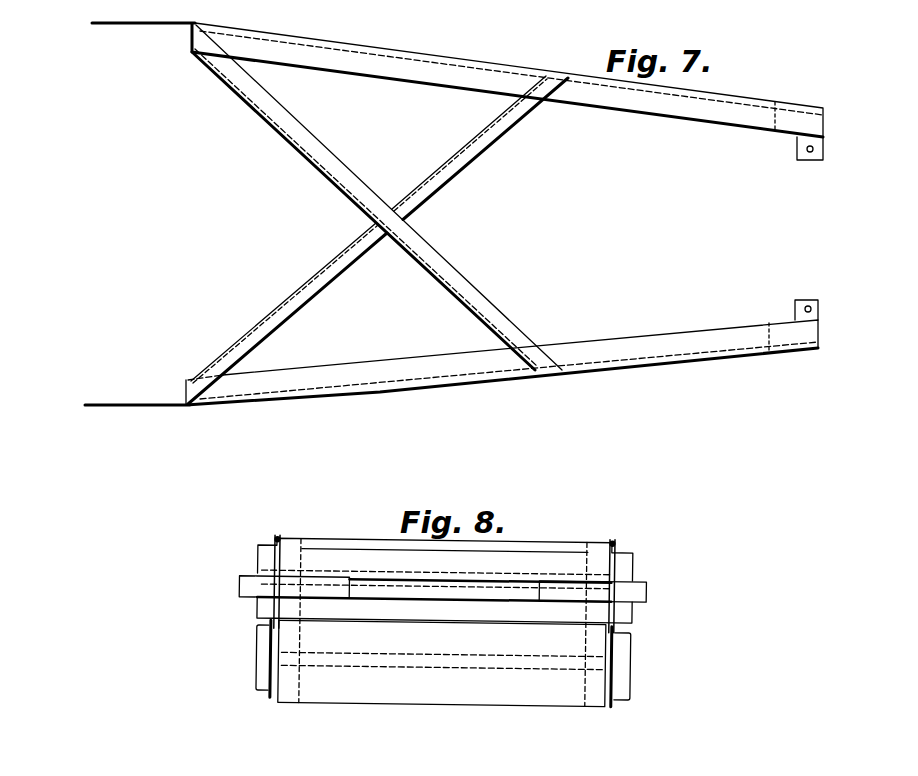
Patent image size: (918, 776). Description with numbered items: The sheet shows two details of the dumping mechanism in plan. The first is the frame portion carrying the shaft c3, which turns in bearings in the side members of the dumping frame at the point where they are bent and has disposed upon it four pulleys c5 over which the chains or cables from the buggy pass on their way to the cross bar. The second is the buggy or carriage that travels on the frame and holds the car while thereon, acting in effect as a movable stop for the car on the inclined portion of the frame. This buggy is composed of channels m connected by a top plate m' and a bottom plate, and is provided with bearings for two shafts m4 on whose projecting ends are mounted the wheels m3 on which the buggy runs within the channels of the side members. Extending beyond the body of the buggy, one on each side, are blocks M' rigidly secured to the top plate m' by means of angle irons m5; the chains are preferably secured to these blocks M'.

In FIG. 7, the shaft c3 is at (641, 113).
In FIG. 7, the pulleys c5 is at (462, 173).
In FIG. 8, the blocks M' is at (438, 589).
In FIG. 8, the channels m is at (444, 643).
In FIG. 8, the top plate m' is at (442, 663).
In FIG. 8, the wheels m3 is at (272, 543).
In FIG. 8, the shafts m4 is at (547, 573).
In FIG. 8, the angle irons m5 is at (468, 572).